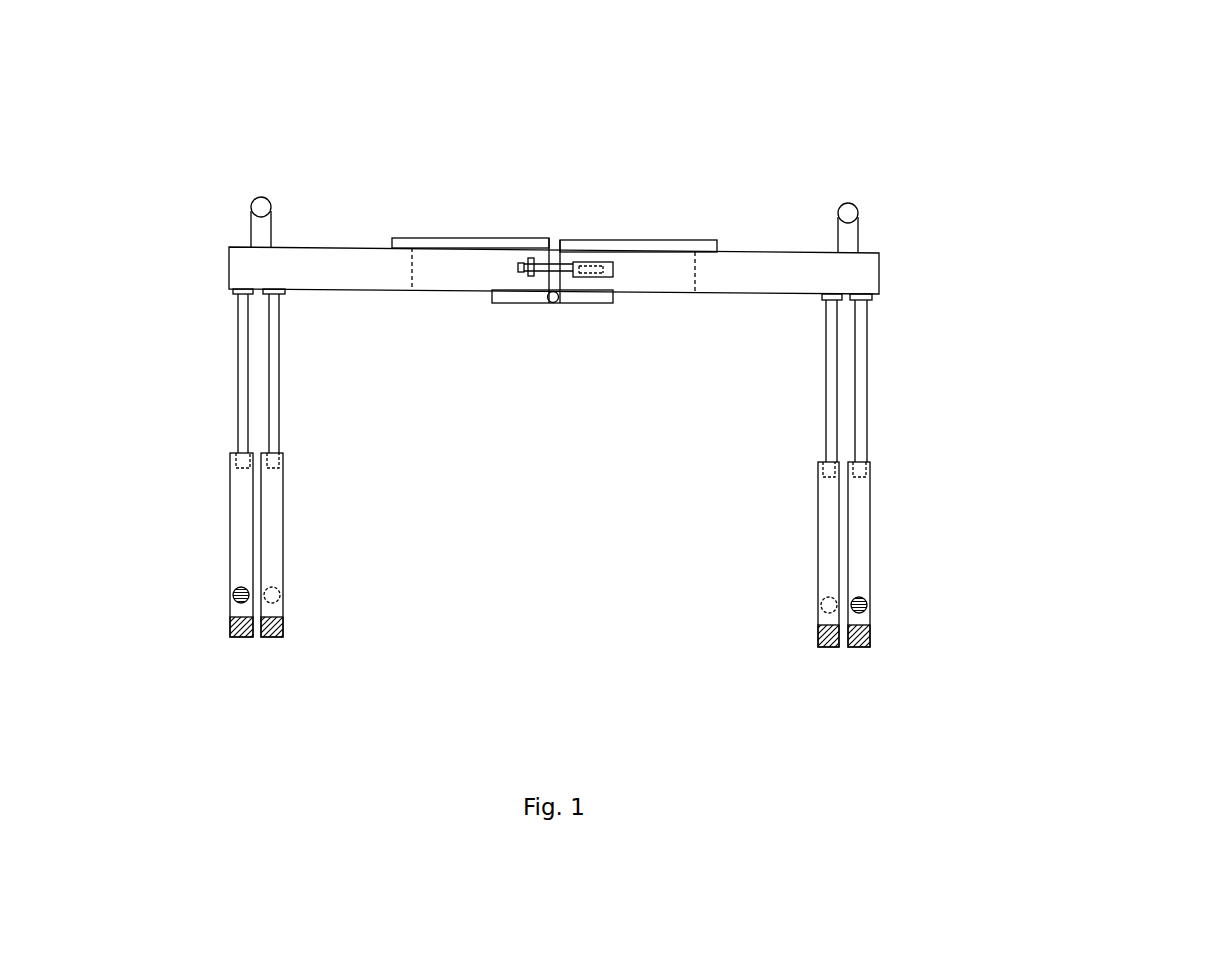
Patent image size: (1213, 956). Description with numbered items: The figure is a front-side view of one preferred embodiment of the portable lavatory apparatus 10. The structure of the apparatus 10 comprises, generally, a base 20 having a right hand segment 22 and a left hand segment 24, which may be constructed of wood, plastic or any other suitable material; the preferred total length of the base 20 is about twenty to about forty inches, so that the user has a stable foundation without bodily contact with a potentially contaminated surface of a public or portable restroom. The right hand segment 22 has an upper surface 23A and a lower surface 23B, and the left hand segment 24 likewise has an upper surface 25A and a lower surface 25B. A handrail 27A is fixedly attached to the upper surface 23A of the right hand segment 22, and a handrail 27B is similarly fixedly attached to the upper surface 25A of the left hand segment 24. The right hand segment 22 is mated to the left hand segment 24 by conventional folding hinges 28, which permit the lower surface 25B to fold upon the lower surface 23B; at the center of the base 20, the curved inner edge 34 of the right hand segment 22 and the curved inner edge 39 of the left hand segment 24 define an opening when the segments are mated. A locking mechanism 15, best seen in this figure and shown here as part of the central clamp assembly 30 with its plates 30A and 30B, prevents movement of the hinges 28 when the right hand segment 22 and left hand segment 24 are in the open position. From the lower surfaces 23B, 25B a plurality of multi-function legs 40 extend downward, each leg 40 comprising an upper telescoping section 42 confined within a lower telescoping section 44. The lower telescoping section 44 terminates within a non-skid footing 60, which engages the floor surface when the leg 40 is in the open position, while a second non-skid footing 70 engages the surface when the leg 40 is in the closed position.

The portable lavatory apparatus 10 is at (1043, 148).
The locking mechanism 15 is at (613, 270).
The base 20 is at (909, 284).
The right hand segment 22 is at (757, 273).
The upper surface 23A is at (777, 253).
The lower surface 23B is at (765, 294).
The left hand segment 24 is at (333, 268).
The upper surface 25A is at (297, 247).
The lower surface 25B is at (302, 290).
The handrail 27A is at (848, 203).
The handrail 27B is at (261, 196).
The folding hinges 28 is at (512, 303).
The clamp assembly 30 is at (554, 272).
The first clamp plate 30A is at (675, 240).
The second clamp plate 30B is at (434, 238).
The inner edge 34 is at (694, 272).
The inner edge 39 is at (412, 270).
The multi-function leg 40 is at (784, 508).
The upper telescoping section 42 is at (868, 340).
The lower telescoping section 44 is at (870, 503).
The non-skid footing 60 is at (818, 637).
The non-skid footing 70 is at (866, 605).